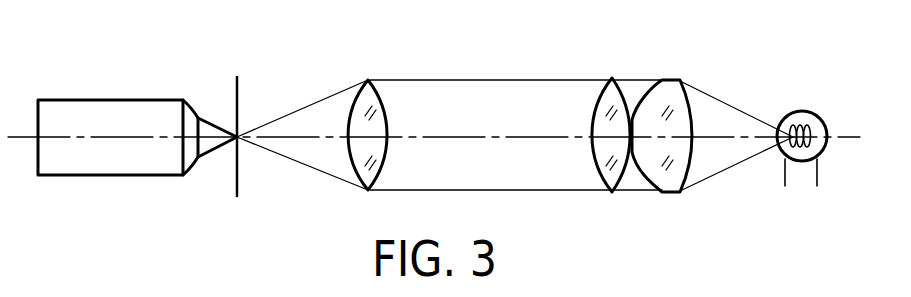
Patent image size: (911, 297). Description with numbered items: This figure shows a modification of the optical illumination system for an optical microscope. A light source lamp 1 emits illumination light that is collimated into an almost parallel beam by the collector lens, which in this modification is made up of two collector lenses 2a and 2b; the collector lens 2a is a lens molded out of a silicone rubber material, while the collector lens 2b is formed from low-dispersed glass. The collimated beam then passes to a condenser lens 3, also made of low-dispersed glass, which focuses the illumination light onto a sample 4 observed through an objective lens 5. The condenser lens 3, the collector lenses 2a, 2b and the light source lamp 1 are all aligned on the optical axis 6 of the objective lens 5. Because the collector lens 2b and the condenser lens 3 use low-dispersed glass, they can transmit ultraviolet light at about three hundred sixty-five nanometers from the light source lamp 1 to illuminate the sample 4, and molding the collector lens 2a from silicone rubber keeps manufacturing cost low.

The light source lamp 1 is at (803, 124).
The collector lens 2a is at (684, 104).
The collector lens 2b is at (622, 97).
The condenser lens 3 is at (383, 98).
The sample 4 is at (237, 98).
The objective lens 5 is at (135, 100).
The optical axis 6 is at (848, 130).